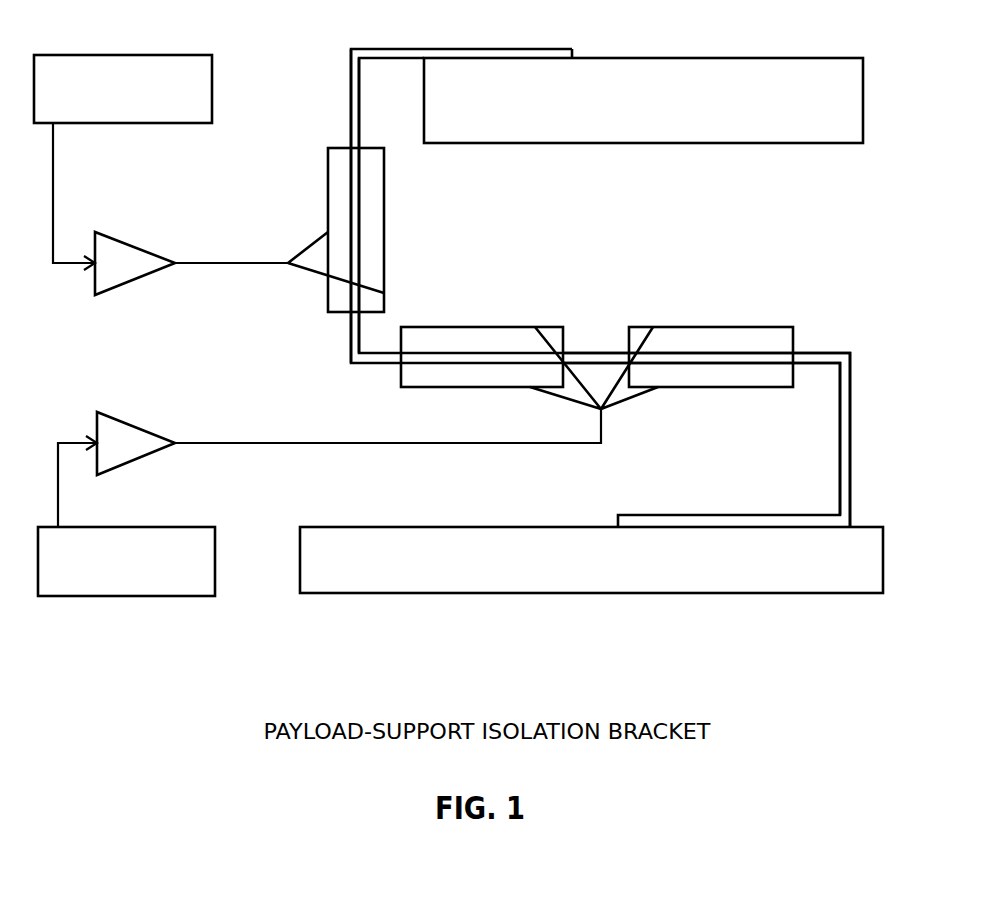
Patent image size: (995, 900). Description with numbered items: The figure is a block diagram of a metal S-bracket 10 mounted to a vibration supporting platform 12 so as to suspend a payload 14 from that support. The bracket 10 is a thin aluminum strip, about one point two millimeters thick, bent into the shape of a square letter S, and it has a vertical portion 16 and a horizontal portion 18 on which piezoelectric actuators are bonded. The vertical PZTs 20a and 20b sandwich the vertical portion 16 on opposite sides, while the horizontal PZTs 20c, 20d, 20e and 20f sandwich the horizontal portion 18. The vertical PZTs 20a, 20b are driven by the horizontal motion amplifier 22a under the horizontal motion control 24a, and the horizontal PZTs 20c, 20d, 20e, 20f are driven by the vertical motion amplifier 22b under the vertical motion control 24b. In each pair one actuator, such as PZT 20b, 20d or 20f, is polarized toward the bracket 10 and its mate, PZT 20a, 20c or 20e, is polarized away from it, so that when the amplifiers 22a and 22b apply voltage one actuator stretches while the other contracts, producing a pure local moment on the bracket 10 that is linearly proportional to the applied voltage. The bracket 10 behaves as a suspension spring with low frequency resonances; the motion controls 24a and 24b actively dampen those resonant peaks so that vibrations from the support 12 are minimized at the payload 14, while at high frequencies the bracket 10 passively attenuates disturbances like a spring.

The S-bracket 10 is at (507, 49).
The vibration supporting platform 12 is at (300, 563).
The payload 14 is at (682, 58).
The vertical portion 16 is at (348, 92).
The horizontal portion 18 is at (813, 352).
The vertical PZT 20a is at (384, 213).
The vertical PZT 20b is at (327, 205).
The horizontal PZT 20c is at (478, 327).
The horizontal PZT 20d is at (478, 387).
The horizontal PZT 20e is at (690, 327).
The horizontal PZT 20f is at (718, 387).
The horizontal motion amplifier 22a is at (139, 283).
The vertical motion amplifier 22b is at (135, 425).
The horizontal motion control 24a is at (152, 123).
The vertical motion control 24b is at (137, 527).